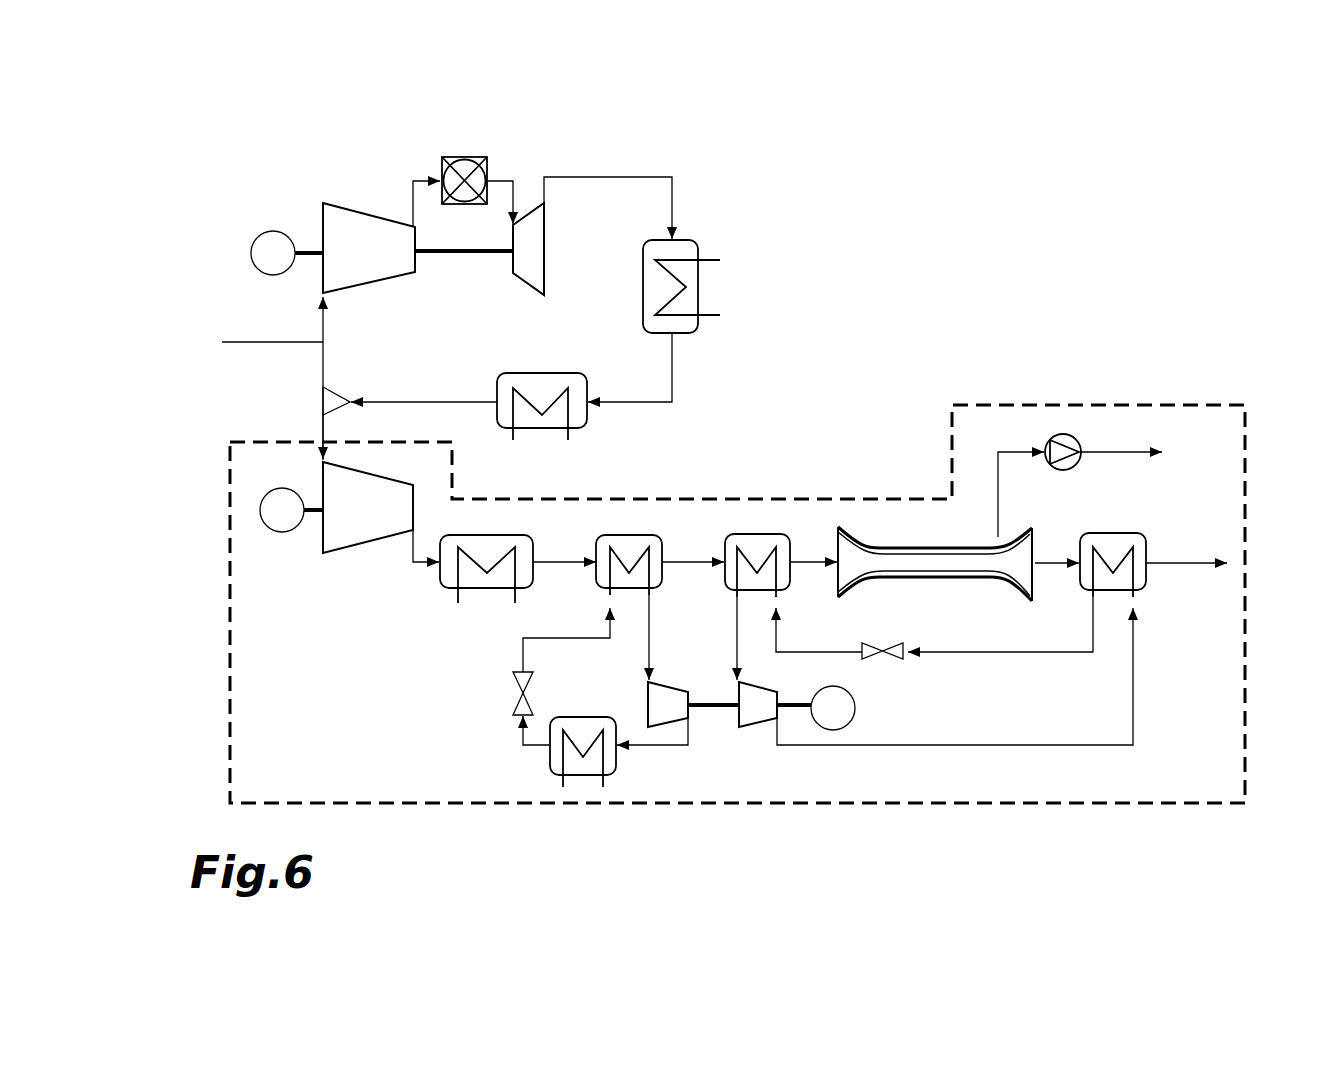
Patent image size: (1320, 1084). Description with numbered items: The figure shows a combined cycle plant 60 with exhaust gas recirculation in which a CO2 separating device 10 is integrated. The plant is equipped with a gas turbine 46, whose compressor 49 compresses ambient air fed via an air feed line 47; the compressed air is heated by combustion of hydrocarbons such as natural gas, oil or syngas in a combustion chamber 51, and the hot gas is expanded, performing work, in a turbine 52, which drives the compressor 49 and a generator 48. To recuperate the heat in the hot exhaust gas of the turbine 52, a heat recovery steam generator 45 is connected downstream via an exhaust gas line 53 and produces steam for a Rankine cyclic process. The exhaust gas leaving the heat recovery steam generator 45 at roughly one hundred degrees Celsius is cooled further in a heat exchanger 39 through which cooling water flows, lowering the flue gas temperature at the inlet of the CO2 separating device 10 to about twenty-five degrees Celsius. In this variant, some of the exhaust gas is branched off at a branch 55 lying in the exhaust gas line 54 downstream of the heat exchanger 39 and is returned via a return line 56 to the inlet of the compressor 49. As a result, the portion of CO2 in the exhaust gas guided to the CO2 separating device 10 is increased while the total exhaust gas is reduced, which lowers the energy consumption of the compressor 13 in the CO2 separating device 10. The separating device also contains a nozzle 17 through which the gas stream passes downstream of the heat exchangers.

The CO2 separating device 10 is at (1135, 803).
The compressor 13 is at (381, 523).
The nozzle / mixing zone 17 is at (918, 555).
The heat exchanger 39 is at (582, 422).
The heat recovery steam generator 45 is at (688, 245).
The gas turbine 46 is at (345, 165).
The air feed line 47 is at (242, 341).
The generator 48 is at (266, 243).
The compressor 49 is at (383, 266).
The combustion chamber 51 is at (468, 163).
The turbine 52 is at (533, 250).
The exhaust gas line 53 is at (613, 173).
The exhaust gas line 54 is at (433, 400).
The branch 55 is at (320, 398).
The return line 56 is at (325, 360).
The combined cycle plant 60 is at (944, 323).